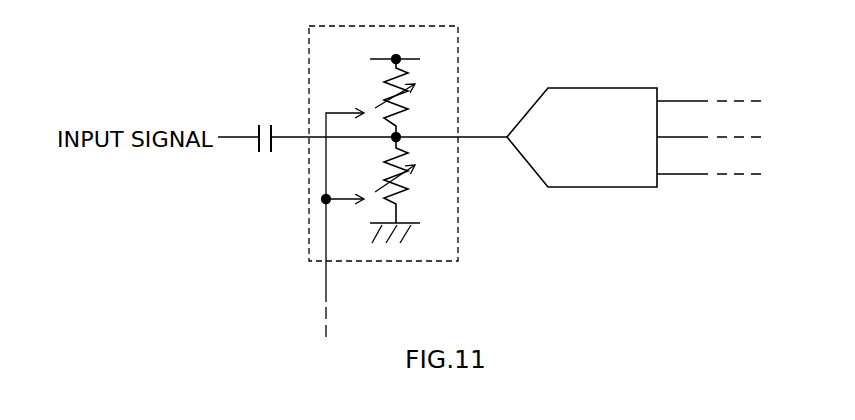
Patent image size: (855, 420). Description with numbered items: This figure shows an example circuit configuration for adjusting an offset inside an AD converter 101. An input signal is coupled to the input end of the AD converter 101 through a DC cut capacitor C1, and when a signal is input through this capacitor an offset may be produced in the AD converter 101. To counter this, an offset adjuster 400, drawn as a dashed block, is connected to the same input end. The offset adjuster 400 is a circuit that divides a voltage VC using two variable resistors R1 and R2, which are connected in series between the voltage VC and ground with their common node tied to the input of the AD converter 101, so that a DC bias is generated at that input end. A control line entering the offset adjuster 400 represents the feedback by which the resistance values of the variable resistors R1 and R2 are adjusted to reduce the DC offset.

The offset adjuster 400 is at (415, 181).
The AD converter 101 is at (618, 86).
The DC cut capacitor C1 is at (263, 125).
The variable resistor R1 is at (415, 105).
The variable resistor R2 is at (415, 187).